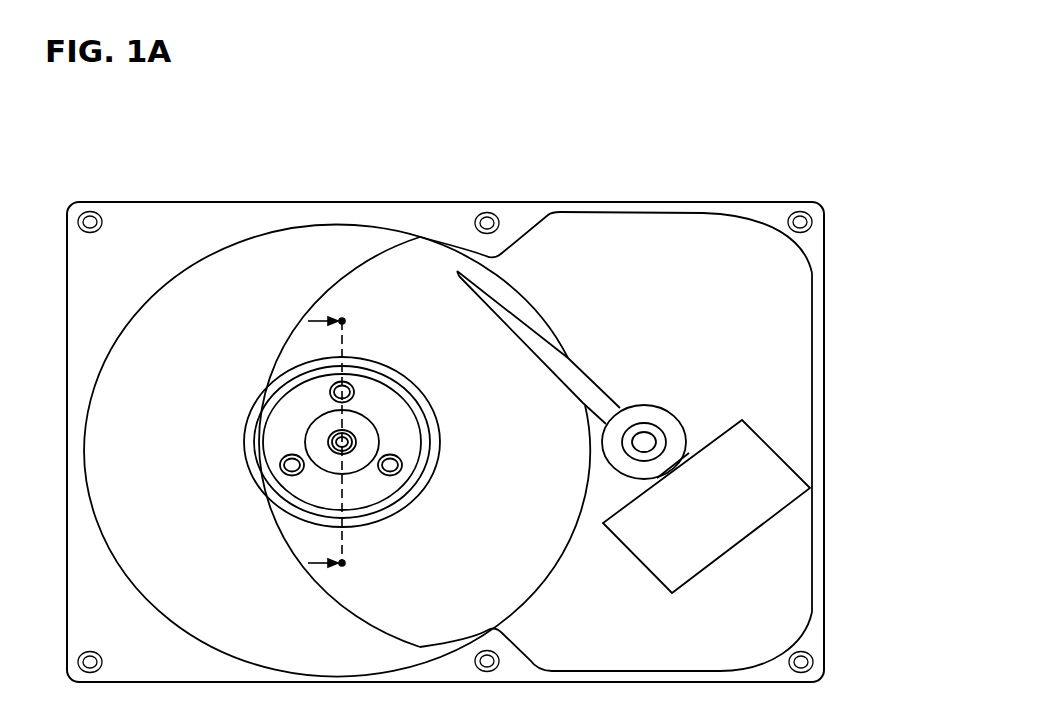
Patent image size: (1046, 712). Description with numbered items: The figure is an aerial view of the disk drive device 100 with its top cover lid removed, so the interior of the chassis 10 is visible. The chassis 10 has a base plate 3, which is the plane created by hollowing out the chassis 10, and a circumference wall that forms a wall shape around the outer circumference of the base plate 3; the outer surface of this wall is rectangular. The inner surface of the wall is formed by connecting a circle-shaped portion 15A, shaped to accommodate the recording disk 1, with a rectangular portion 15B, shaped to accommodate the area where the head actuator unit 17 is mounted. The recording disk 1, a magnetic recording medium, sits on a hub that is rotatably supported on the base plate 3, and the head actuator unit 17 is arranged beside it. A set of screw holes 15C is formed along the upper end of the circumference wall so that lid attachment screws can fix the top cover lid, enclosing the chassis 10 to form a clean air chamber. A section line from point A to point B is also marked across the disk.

The disk drive device 100 is at (782, 139).
The recording disk 1 is at (359, 260).
The base plate 3 is at (612, 232).
The chassis 10 is at (578, 441).
The circle-shaped portion 15A is at (182, 222).
The rectangular portion 15B is at (824, 394).
The screw holes 15C is at (812, 222).
The head actuator unit 17 is at (763, 477).